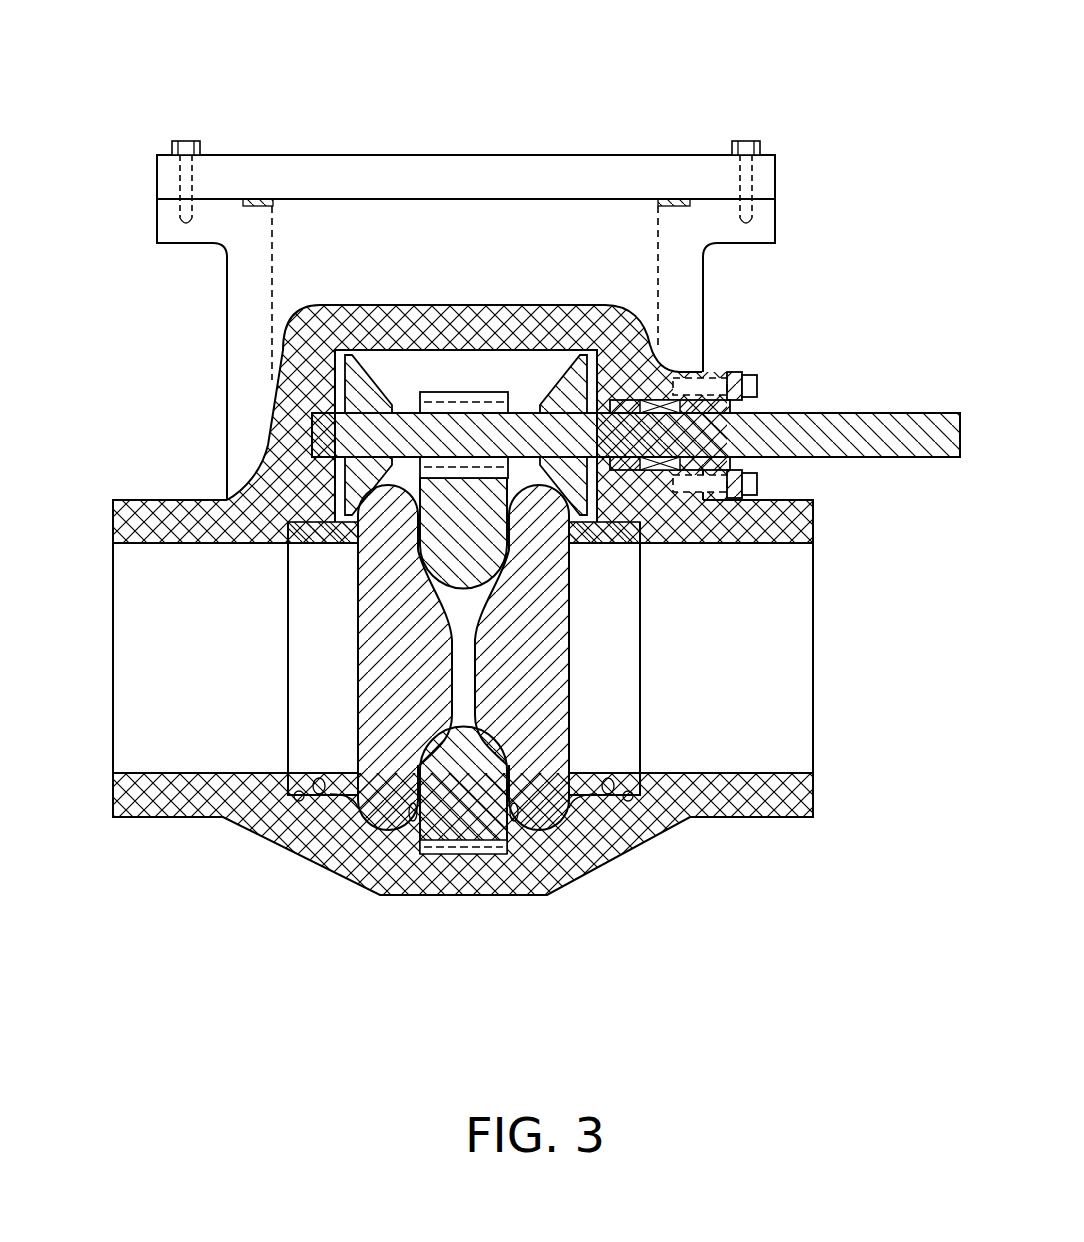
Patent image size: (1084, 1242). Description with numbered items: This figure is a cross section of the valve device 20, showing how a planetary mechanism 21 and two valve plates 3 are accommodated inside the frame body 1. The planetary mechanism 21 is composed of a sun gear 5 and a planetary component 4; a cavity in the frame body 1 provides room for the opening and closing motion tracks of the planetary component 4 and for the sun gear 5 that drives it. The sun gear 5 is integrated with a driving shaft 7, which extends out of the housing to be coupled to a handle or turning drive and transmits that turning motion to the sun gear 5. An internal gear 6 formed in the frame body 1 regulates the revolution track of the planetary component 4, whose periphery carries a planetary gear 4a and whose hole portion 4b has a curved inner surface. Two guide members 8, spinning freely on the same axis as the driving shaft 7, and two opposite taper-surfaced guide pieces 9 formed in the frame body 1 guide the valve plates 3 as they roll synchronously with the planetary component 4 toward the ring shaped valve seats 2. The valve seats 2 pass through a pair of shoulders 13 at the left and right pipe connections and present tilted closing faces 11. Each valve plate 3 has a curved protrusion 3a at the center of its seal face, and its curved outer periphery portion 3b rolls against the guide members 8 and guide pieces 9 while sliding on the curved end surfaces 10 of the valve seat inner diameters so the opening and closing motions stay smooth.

The valve device 20 is at (828, 95).
The planetary mechanism 21 is at (428, 377).
The frame body 1 is at (567, 307).
The valve seat 2 is at (297, 793).
The valve plate 3 is at (729, 372).
The curved protrusion 3a is at (568, 665).
The outer periphery portion 3b is at (410, 850).
The planetary component 4 is at (303, 758).
The planetary gear 4a is at (438, 848).
The hole portion 4b is at (455, 605).
The sun gear 5 is at (458, 392).
The internal gear 6 is at (480, 852).
The driving shaft 7 is at (858, 413).
The guide member 8 is at (283, 345).
The guide piece 9 is at (378, 828).
The end surface 10 is at (318, 797).
The closing face 11 is at (358, 556).
The shoulder 13 is at (365, 850).